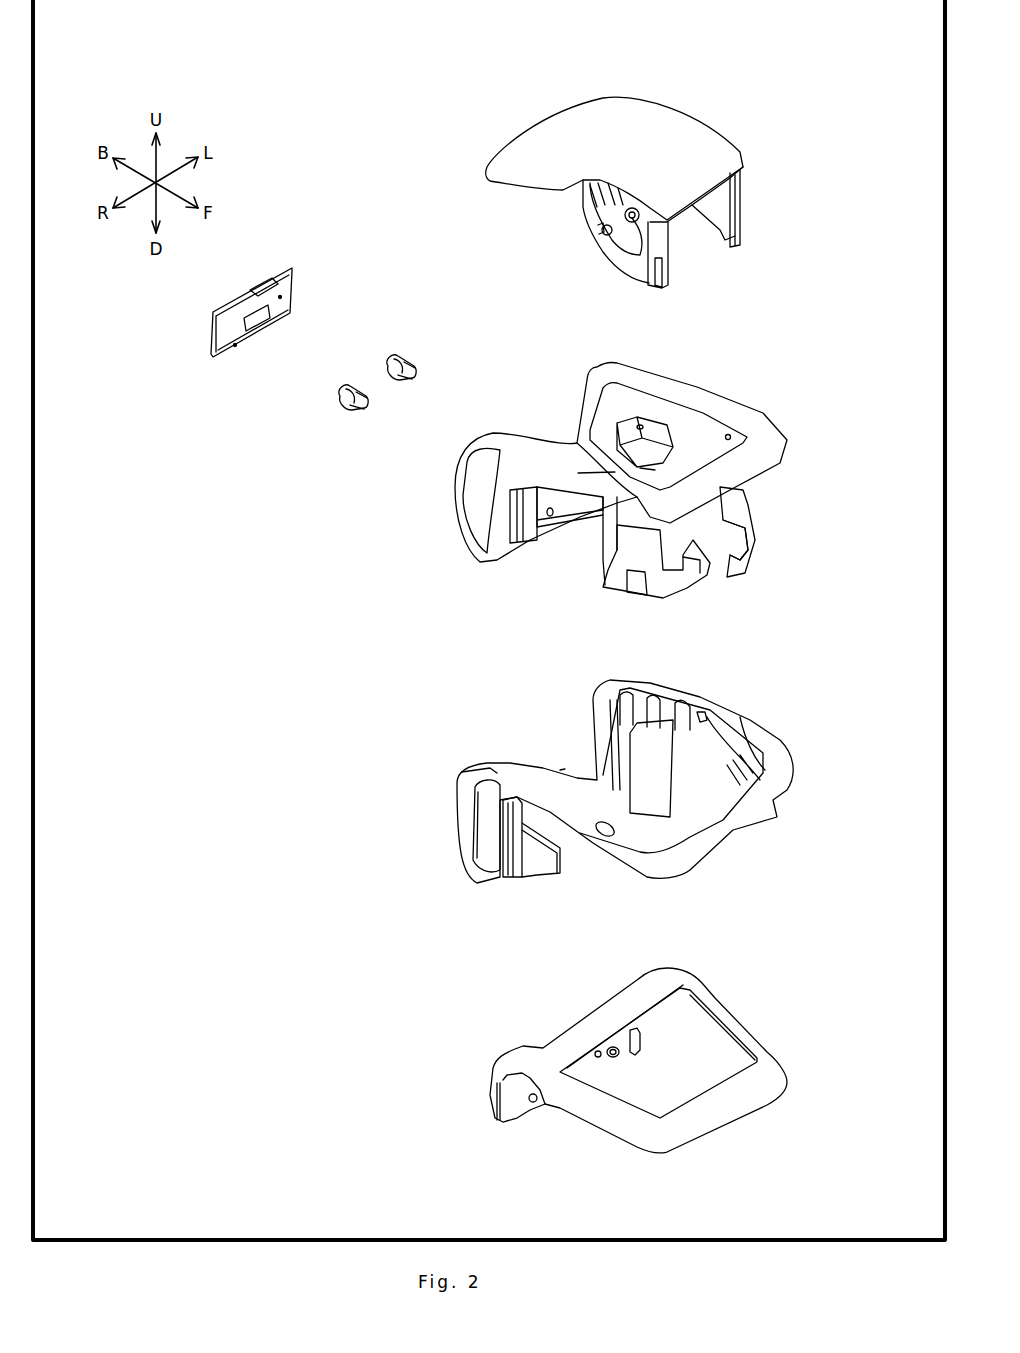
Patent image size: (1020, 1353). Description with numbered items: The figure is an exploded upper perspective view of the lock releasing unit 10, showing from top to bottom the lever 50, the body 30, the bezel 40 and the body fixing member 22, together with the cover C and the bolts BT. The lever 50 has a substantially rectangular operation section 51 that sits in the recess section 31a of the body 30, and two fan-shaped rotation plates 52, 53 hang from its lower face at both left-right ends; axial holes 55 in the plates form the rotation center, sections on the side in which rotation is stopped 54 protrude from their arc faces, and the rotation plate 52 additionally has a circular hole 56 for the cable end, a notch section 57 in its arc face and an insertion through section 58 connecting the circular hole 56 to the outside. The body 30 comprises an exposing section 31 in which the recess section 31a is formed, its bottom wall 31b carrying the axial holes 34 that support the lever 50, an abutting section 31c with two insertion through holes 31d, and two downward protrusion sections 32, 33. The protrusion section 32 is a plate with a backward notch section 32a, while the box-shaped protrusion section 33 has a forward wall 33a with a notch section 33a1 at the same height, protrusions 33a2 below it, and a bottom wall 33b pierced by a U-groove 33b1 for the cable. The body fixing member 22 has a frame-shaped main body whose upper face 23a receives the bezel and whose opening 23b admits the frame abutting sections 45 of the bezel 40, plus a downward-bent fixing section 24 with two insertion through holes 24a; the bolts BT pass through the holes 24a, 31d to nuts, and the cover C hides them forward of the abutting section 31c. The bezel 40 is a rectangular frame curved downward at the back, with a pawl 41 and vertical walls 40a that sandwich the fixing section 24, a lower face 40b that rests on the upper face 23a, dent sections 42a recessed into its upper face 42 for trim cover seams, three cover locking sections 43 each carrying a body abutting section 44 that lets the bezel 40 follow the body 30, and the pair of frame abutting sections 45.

The lock releasing unit 10 is at (333, 95).
The cover C is at (283, 297).
The bolts BT is at (395, 357).
The lever 50 is at (729, 79).
The operation section 51 is at (597, 123).
The rotation plate 52 is at (640, 250).
The rotation plate 53 is at (740, 190).
The sections on the side in which rotation is stopped 54 is at (720, 242).
The axial holes 55 is at (632, 208).
The circular hole 56 is at (601, 230).
The notch section 57 is at (666, 262).
The insertion through section 58 is at (599, 235).
The body 30 is at (767, 371).
The exposing section 31 is at (772, 410).
The recess section 31a is at (650, 405).
The bottom wall 31b is at (697, 443).
The abutting section 31c is at (540, 548).
The insertion through holes 31d is at (552, 516).
The protrusion section 32 is at (740, 535).
The notch section 32a is at (750, 530).
The protrusion section 33 is at (598, 605).
The forward wall 33a is at (675, 565).
The notch section 33a1 is at (700, 558).
The protrusions 33a2 is at (700, 585).
The bottom wall 33b is at (650, 595).
The U-groove 33b1 is at (635, 595).
The axial holes 34 is at (615, 472).
The bezel 40 is at (782, 683).
The vertical walls 40a is at (513, 870).
The lower face 40b is at (638, 875).
The pawl 41 is at (550, 857).
The upper face 42 is at (735, 795).
The dent sections 42a is at (630, 688).
The cover locking sections 43 is at (668, 722).
The body abutting section 44 is at (650, 730).
The frame abutting sections 45 is at (697, 740).
The body fixing member 22 is at (774, 995).
The upper face 23a is at (755, 1045).
The opening 23b is at (713, 1095).
The fixing section 24 is at (620, 1052).
The insertion through holes 24a is at (612, 1055).